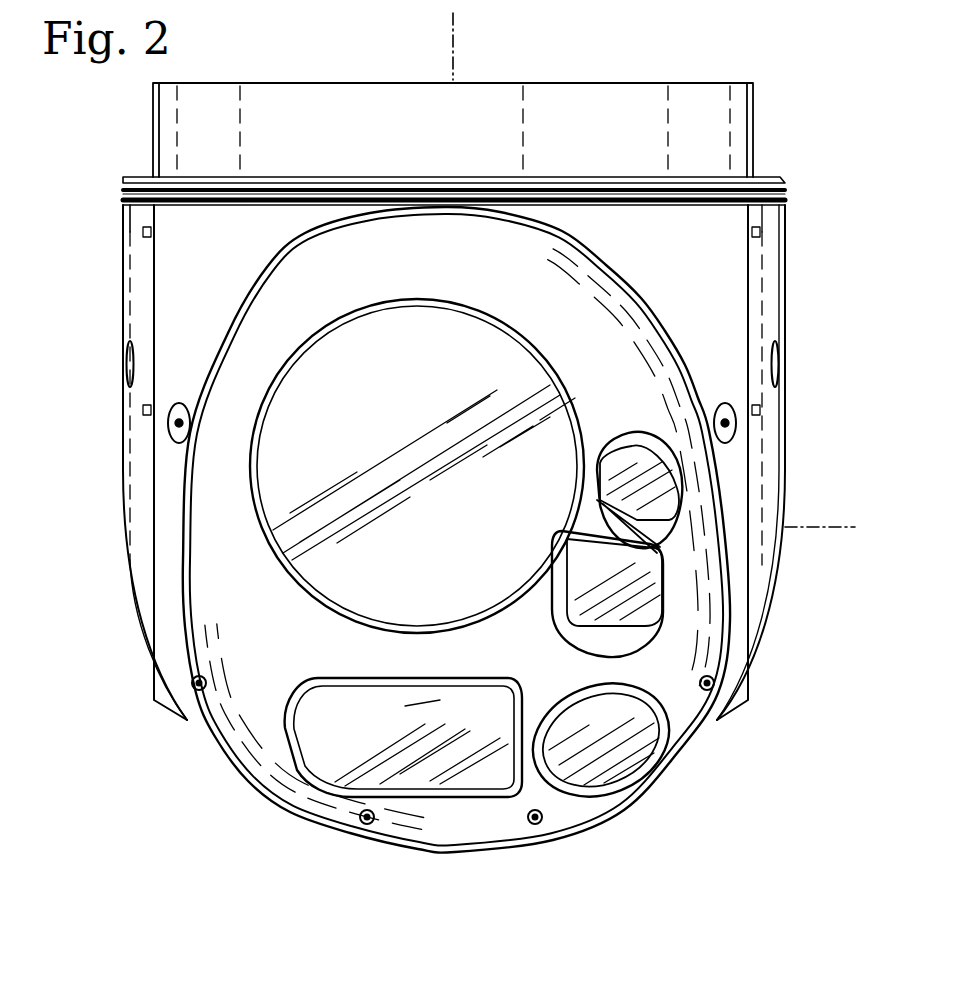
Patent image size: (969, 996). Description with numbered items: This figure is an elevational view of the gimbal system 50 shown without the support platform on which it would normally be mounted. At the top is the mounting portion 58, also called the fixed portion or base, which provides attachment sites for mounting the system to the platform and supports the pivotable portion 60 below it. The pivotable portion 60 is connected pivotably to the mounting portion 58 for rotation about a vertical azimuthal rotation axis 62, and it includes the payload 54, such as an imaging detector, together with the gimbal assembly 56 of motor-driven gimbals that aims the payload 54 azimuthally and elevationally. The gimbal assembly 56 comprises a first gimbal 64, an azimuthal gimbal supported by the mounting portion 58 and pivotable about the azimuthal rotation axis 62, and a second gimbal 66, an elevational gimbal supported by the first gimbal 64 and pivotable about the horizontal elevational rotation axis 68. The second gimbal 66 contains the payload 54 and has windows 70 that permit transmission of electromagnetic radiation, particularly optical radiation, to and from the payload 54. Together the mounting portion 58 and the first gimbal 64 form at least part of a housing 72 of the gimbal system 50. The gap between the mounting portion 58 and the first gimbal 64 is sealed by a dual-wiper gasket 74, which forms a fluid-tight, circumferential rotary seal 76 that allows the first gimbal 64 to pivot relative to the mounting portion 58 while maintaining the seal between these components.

The gimbal system 50 is at (78, 98).
The payload 54 is at (352, 418).
The gimbal assembly 56 is at (122, 403).
The mounting portion 58 is at (147, 138).
The pivotable portion 60 is at (86, 349).
The azimuthal rotation axis 62 is at (462, 60).
The first gimbal 64 is at (122, 498).
The second gimbal 66 is at (264, 800).
The elevational rotation axis 68 is at (830, 525).
The windows 70 is at (628, 487).
The housing 72 is at (802, 241).
The dual-wiper gasket 74 is at (124, 194).
The rotary seal 76 is at (120, 188).